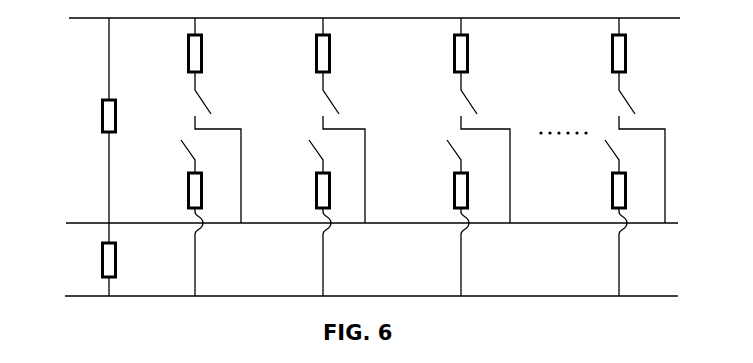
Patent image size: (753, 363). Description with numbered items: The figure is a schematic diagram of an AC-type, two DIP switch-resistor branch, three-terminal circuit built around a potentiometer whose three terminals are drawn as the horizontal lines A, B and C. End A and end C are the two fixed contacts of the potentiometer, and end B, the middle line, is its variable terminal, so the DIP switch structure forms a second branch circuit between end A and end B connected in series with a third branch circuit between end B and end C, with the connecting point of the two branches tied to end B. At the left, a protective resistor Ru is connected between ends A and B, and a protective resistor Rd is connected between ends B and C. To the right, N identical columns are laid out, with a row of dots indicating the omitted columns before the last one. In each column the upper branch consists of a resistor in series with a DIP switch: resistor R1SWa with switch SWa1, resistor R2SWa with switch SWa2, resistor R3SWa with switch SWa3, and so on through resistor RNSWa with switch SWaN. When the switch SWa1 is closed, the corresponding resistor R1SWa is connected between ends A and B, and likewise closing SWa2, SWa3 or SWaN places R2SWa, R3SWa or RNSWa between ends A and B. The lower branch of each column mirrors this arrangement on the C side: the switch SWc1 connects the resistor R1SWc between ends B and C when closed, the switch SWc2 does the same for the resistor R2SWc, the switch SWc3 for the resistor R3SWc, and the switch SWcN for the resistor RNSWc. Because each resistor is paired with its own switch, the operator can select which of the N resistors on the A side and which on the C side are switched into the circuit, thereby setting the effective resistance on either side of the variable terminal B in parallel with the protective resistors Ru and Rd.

The end A of the potentiometer A is at (362, 25).
The end B of the potentiometer B is at (361, 204).
The end C of the potentiometer C is at (361, 292).
The protective resistor Ru is at (92, 130).
The protective resistor Rd is at (92, 269).
The first resistor connected to DIP switch and end A R1SWa is at (162, 45).
The first DIP switch on end A side SWa1 is at (182, 147).
The first DIP switch on end C side SWc1 is at (161, 154).
The first resistor connected to DIP switch and end C R1SWc is at (163, 234).
The second resistor connected to DIP switch and end A R2SWa is at (291, 45).
The second DIP switch on end A side SWa2 is at (308, 147).
The second DIP switch on end C side SWc2 is at (290, 154).
The second resistor connected to DIP switch and end C R2SWc is at (291, 234).
The third resistor connected to DIP switch and end A R3SWa is at (430, 45).
The third DIP switch on end A side SWa3 is at (451, 147).
The third DIP switch on end C side SWc3 is at (425, 154).
The third resistor connected to DIP switch and end C R3SWc is at (430, 234).
The N-th resistor connected to DIP switch and end A RNSWa is at (585, 45).
The N-th DIP switch on end A side SWaN is at (605, 147).
The N-th DIP switch on end C side SWcN is at (584, 154).
The N-th resistor connected to DIP switch and end C RNSWc is at (585, 234).